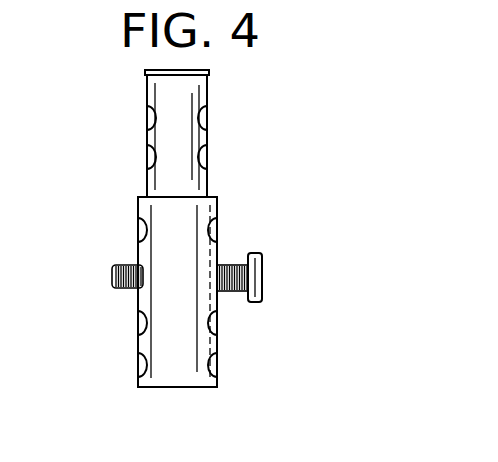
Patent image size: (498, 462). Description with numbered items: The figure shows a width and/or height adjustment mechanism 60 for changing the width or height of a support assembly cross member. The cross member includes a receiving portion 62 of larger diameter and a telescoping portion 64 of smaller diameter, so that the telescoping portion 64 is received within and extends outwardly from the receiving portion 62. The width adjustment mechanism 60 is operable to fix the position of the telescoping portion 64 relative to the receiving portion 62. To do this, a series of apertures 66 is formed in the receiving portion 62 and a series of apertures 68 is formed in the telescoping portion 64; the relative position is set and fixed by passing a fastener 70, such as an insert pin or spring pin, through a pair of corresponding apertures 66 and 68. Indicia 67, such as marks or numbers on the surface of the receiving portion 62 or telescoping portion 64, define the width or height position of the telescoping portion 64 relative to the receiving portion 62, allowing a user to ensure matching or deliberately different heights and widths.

The width adjustment mechanism 60 is at (225, 232).
The receiving portion 62 is at (138, 383).
The telescoping portion 64 is at (207, 90).
The apertures 66 is at (138, 320).
The indicia 67 is at (208, 345).
The apertures 68 is at (210, 120).
The fastener 70 is at (235, 265).